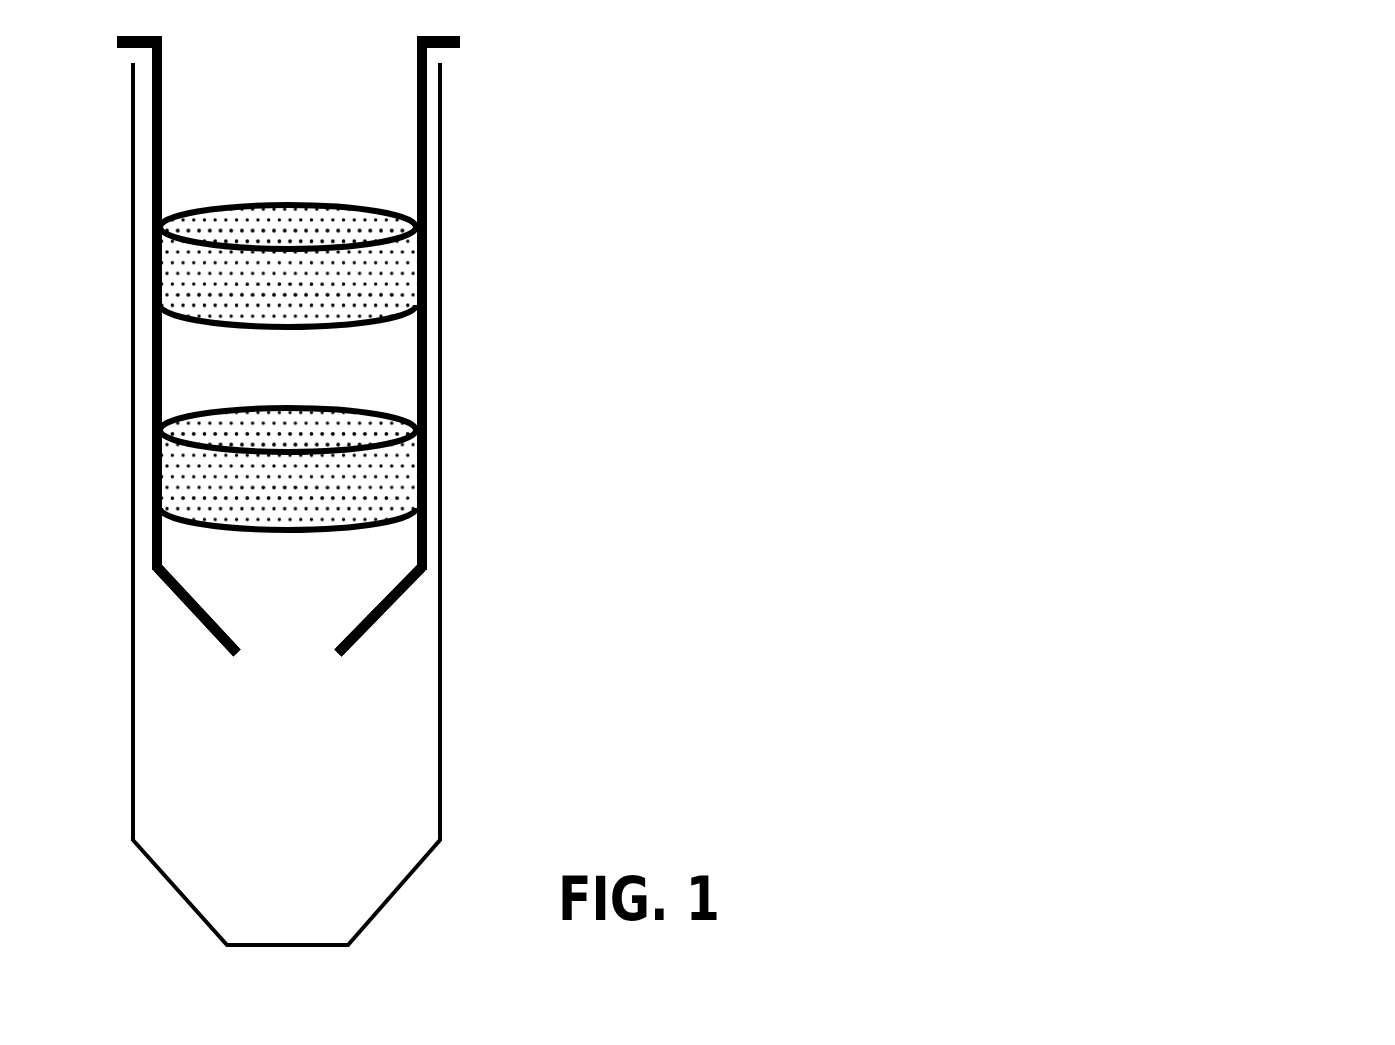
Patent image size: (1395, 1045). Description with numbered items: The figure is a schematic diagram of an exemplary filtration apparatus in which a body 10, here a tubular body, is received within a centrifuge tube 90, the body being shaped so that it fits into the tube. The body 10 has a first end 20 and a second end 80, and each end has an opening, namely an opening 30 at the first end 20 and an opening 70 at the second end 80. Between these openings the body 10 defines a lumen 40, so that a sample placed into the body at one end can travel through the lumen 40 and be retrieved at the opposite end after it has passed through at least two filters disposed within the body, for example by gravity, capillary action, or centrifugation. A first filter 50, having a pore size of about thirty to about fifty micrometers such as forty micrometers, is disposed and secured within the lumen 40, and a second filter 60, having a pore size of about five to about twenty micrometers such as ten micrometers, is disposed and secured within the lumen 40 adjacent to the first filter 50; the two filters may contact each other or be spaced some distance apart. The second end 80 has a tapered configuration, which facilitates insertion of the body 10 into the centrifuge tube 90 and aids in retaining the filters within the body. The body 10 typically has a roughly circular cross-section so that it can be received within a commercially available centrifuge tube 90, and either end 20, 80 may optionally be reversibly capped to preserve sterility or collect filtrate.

The body 10 is at (538, 50).
The first end 20 is at (459, 68).
The opening 30 is at (322, 66).
The lumen 40 is at (332, 169).
The first filter 50 is at (438, 279).
The second filter 60 is at (440, 475).
The opening 70 is at (318, 614).
The second end 80 is at (367, 658).
The centrifuge tube 90 is at (478, 693).